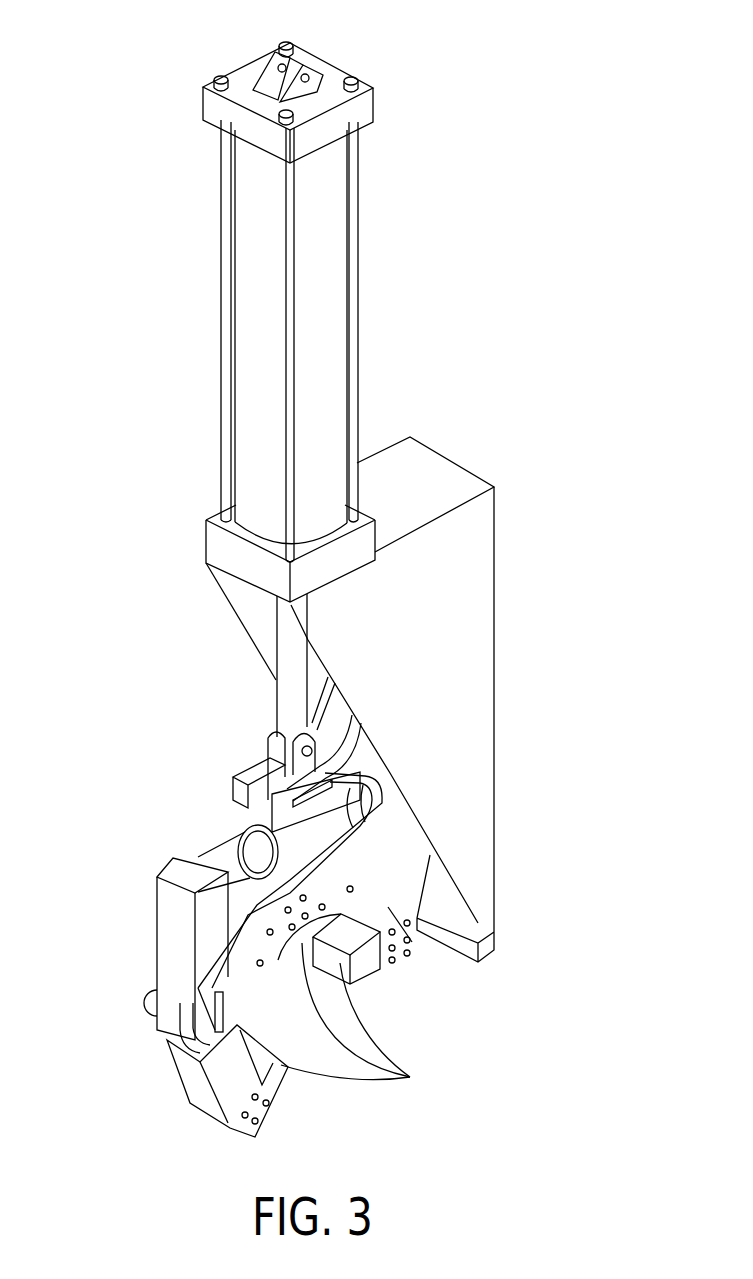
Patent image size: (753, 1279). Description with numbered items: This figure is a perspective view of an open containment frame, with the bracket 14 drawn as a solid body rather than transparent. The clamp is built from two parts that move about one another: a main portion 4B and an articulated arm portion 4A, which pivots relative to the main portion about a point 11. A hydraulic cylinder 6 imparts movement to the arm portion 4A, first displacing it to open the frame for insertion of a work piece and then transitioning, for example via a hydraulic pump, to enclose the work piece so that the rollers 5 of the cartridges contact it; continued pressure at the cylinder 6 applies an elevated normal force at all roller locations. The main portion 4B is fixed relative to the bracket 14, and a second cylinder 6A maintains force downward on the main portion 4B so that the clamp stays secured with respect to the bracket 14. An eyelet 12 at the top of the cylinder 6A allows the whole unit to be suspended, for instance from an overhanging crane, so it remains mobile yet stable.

The eyelet 12 is at (308, 70).
The cylinder 6A is at (243, 255).
The bracket 14 is at (478, 630).
The hydraulic cylinder 6 is at (247, 830).
The point 11 is at (172, 1012).
The main portion 4B is at (413, 948).
The rollers 5 is at (292, 1066).
The arm portion 4A is at (227, 1080).